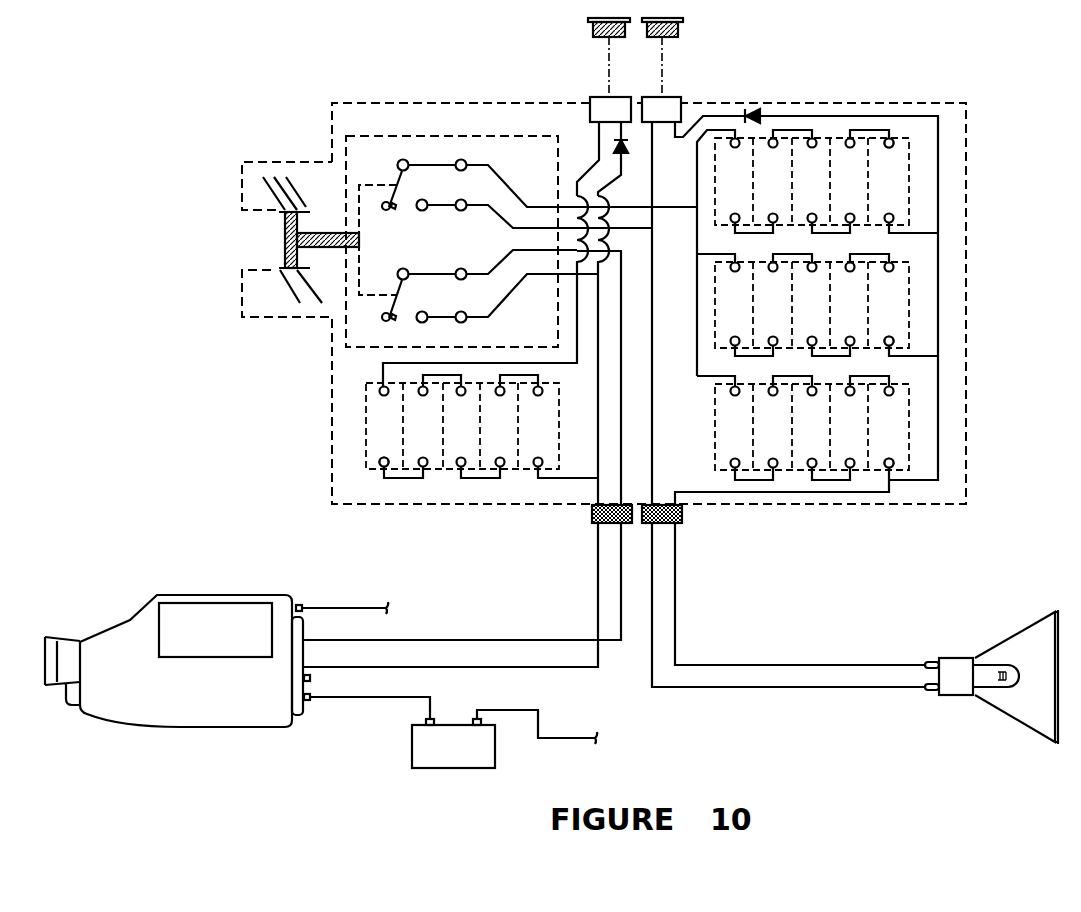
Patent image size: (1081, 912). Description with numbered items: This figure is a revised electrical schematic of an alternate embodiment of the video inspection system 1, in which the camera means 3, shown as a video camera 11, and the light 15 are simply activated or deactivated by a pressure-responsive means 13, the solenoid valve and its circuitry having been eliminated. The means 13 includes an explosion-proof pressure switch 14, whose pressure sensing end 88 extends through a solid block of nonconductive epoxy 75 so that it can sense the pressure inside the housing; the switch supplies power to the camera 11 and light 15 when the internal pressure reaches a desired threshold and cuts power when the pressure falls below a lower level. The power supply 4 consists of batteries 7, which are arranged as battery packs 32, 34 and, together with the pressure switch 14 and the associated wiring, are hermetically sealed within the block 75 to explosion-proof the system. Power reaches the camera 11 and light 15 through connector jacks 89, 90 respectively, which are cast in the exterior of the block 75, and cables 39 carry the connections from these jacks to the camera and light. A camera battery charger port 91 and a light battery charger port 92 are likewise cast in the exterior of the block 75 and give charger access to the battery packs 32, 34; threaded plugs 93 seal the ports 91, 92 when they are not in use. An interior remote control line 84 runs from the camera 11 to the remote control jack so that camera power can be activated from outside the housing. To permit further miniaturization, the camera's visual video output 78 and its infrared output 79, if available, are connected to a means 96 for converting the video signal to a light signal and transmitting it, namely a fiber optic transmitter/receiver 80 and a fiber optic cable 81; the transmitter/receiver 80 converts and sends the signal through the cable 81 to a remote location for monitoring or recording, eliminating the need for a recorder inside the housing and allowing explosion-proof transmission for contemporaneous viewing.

The video inspection system 1 is at (165, 497).
The camera means 3 is at (188, 580).
The power supply 4 is at (945, 282).
The batteries 7 is at (373, 465).
The video camera 11 is at (250, 713).
The means for preventing operation of camera 13 is at (252, 254).
The pressure switch 14 is at (287, 162).
The light 15 is at (1005, 640).
The battery pack 32 is at (917, 165).
The battery pack 34 is at (478, 487).
The cable 39 is at (595, 608).
The block of nonconductive epoxy 75 is at (330, 430).
The visual video output 78 is at (310, 678).
The infrared output 79 is at (310, 700).
The fiber optic transmitter/receiver 80 is at (488, 754).
The fiber optic cable 81 is at (545, 738).
The interior remote control line 84 is at (342, 595).
The pressure sensing end 88 is at (283, 228).
The connector jack 89 is at (590, 514).
The connector jack 90 is at (683, 515).
The camera battery charger port 91 is at (603, 97).
The light battery charger port 92 is at (665, 97).
The threaded plugs 93 is at (710, 27).
The means for converting a video signal to a light signal 96 is at (410, 775).